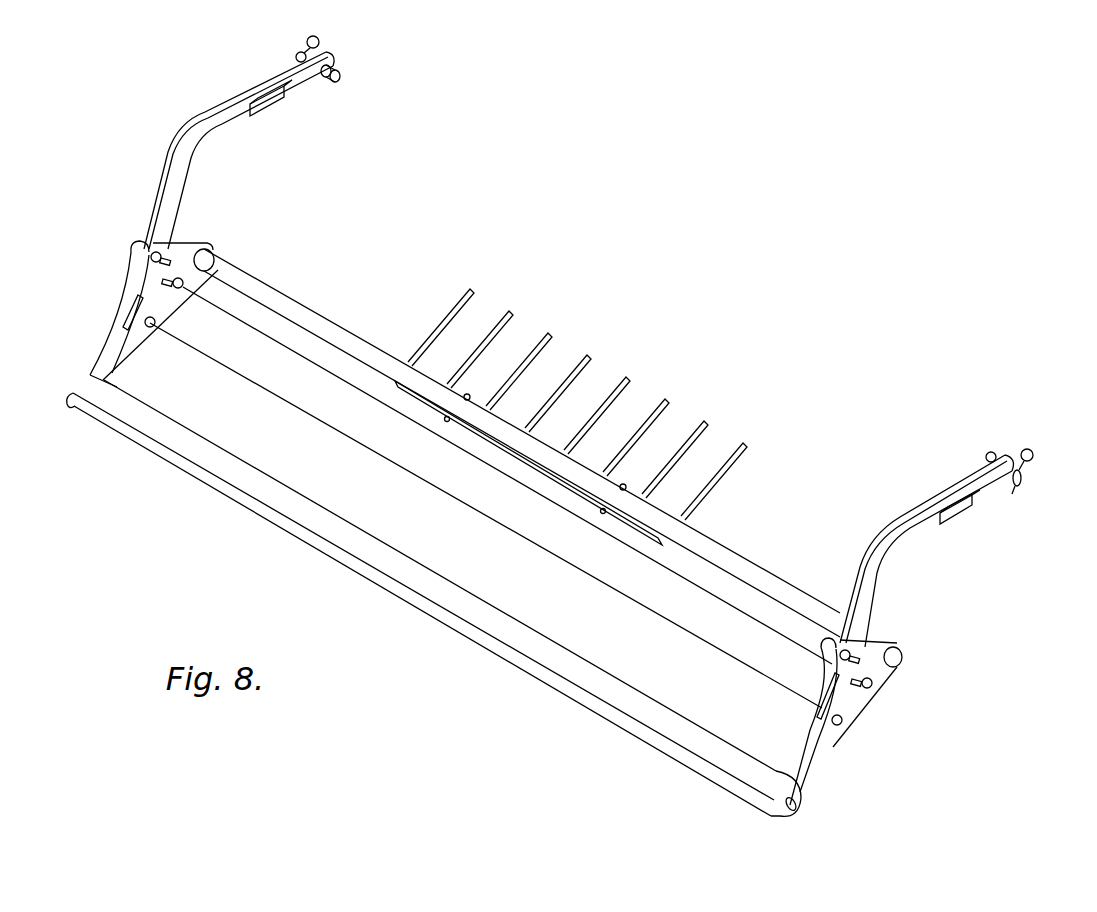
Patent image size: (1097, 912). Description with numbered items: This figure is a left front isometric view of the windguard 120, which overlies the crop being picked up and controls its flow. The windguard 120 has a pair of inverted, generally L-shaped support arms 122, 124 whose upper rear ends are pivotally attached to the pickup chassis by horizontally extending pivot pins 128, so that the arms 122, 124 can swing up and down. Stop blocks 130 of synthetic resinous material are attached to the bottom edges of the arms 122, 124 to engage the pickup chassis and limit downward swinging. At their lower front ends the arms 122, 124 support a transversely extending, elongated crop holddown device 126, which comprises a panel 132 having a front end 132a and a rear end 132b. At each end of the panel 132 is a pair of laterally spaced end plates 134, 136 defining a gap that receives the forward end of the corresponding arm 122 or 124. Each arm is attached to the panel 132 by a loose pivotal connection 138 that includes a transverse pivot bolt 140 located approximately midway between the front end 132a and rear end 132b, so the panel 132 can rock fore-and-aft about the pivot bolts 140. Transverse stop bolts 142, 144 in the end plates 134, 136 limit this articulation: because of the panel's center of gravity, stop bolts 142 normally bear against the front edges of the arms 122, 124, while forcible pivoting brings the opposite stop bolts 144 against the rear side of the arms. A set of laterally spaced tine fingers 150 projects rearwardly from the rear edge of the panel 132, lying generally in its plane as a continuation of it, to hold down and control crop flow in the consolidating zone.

The windguard 120 is at (198, 150).
The support arm 122 is at (268, 106).
The support arm 124 is at (930, 505).
The crop holddown device 126 is at (453, 532).
The pivot pin 128 is at (342, 75).
The stop block 130 is at (283, 113).
The panel 132 is at (453, 532).
The front end of panel 132a is at (605, 712).
The rear end of panel 132b is at (723, 548).
The end plate 134 is at (134, 262).
The end plate 136 is at (165, 298).
The loose pivotal connection 138 is at (172, 326).
The pivot bolt 140 is at (153, 330).
The stop bolt 142 is at (153, 250).
The stop bolt 144 is at (185, 283).
The tine finger 150 is at (455, 297).